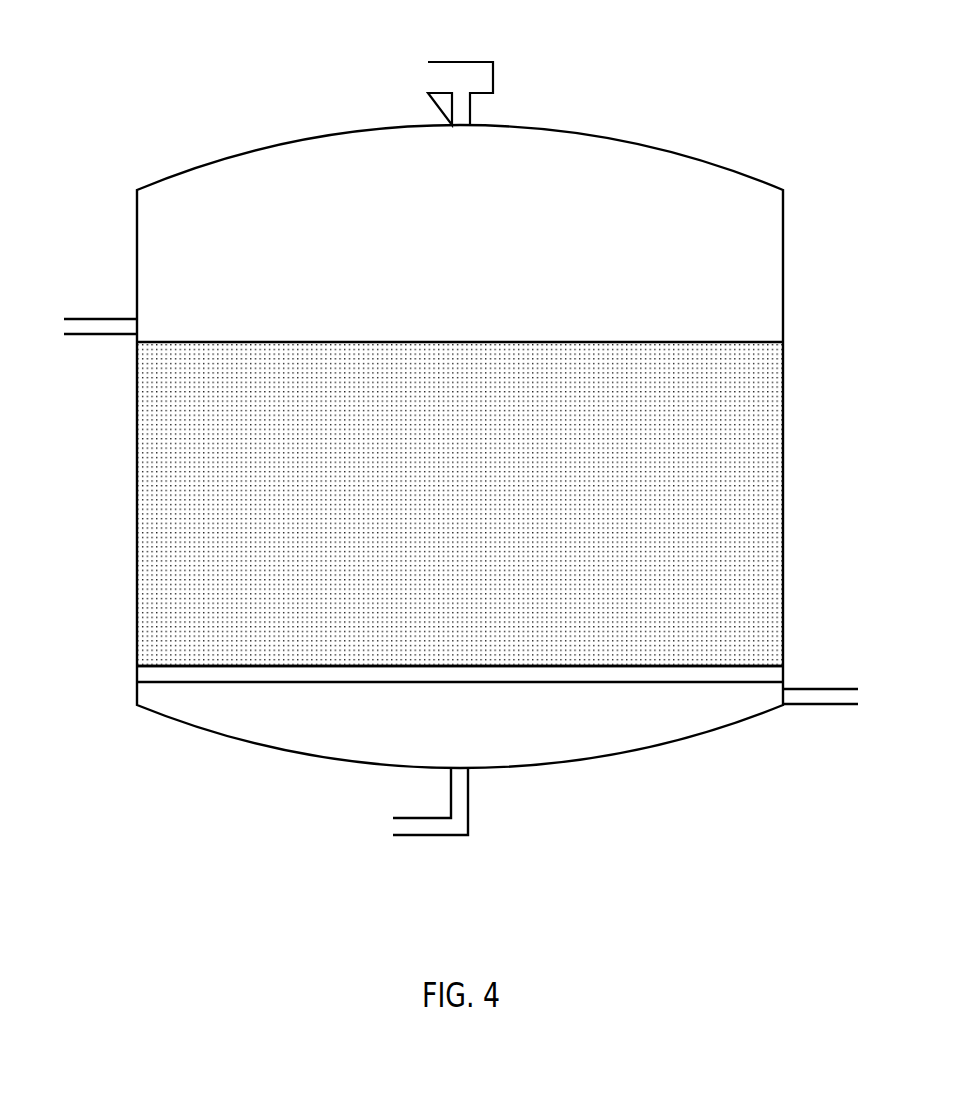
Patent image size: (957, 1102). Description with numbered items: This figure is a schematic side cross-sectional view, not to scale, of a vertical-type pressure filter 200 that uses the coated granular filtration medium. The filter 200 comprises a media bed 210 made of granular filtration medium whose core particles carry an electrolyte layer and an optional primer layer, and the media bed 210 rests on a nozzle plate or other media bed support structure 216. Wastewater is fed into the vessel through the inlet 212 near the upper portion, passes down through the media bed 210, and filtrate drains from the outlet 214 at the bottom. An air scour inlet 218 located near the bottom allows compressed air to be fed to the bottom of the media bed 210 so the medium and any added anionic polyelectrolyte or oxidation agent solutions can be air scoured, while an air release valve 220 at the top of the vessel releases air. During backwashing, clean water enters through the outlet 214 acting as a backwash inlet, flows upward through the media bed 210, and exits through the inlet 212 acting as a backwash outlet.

The vertical-type pressure filter 200 is at (287, 60).
The media bed 210 is at (381, 358).
The inlet 212 is at (113, 326).
The outlet 214 is at (428, 825).
The nozzle plate 216 is at (517, 673).
The air scour inlet 218 is at (807, 698).
The air release valve 220 is at (468, 70).